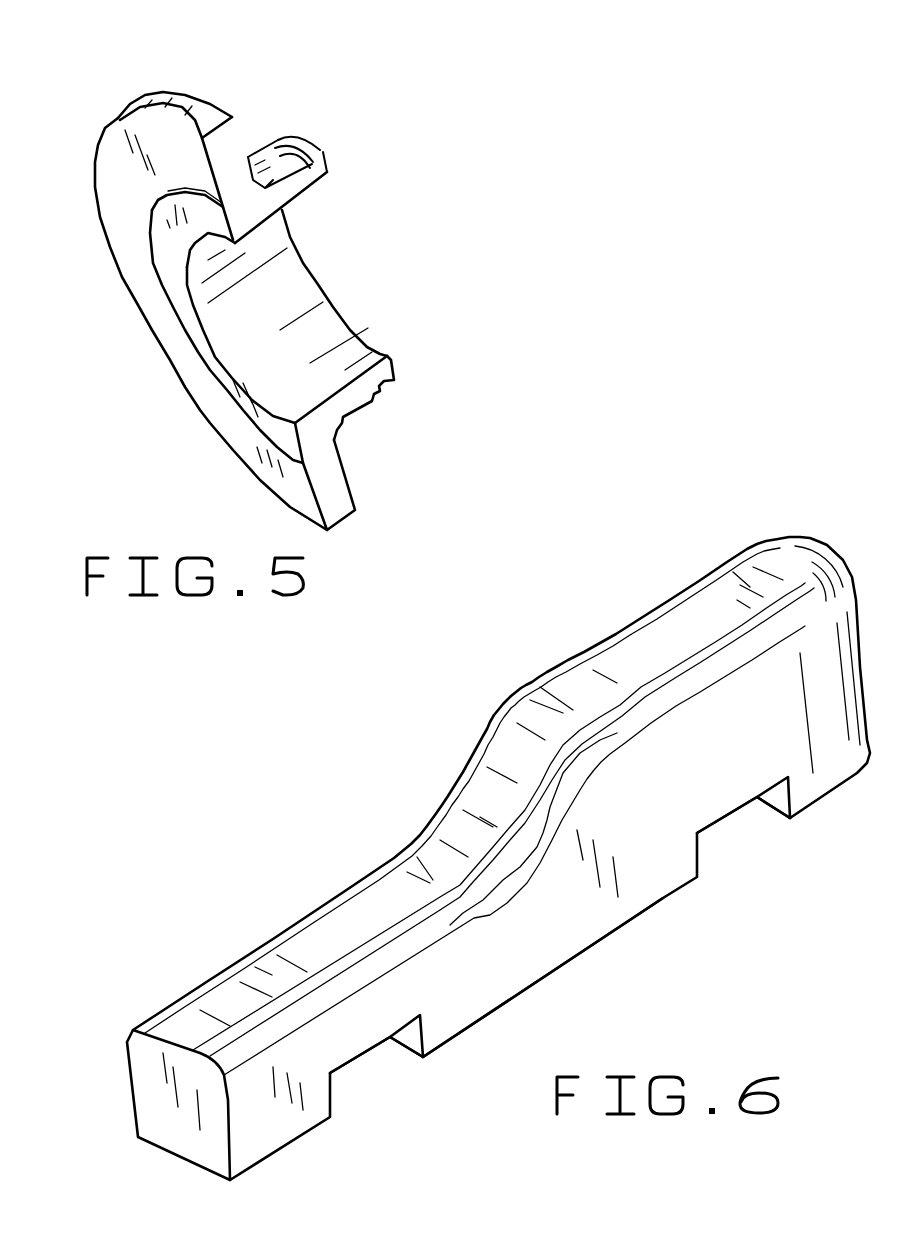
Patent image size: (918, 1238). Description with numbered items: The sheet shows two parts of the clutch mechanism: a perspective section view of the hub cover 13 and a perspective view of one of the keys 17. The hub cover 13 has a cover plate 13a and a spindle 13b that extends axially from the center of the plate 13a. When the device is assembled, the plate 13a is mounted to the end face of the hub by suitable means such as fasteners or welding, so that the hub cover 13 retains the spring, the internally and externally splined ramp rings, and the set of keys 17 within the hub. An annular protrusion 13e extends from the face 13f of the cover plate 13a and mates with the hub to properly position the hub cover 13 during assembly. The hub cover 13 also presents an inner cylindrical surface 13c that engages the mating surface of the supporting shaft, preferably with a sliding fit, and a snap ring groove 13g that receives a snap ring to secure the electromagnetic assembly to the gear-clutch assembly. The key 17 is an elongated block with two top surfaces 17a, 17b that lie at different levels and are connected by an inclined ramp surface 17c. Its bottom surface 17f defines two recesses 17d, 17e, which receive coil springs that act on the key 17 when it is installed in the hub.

In FIG. 5, the hub cover 13 is at (200, 78).
In FIG. 5, the cover plate 13a is at (335, 510).
In FIG. 5, the spindle 13b is at (353, 403).
In FIG. 5, the inner cylindrical surface 13c is at (350, 350).
In FIG. 5, the annular protrusion 13e is at (243, 408).
In FIG. 5, the face 13f is at (107, 180).
In FIG. 5, the snap ring groove 13g is at (307, 152).
In FIG. 6, the key 17 is at (522, 638).
In FIG. 6, the top surface 17a is at (755, 565).
In FIG. 6, the top surface 17b is at (275, 975).
In FIG. 6, the ramp surface 17c is at (483, 782).
In FIG. 6, the recess 17d is at (365, 1058).
In FIG. 6, the recess 17e is at (727, 818).
In FIG. 6, the bottom surface 17f is at (556, 975).